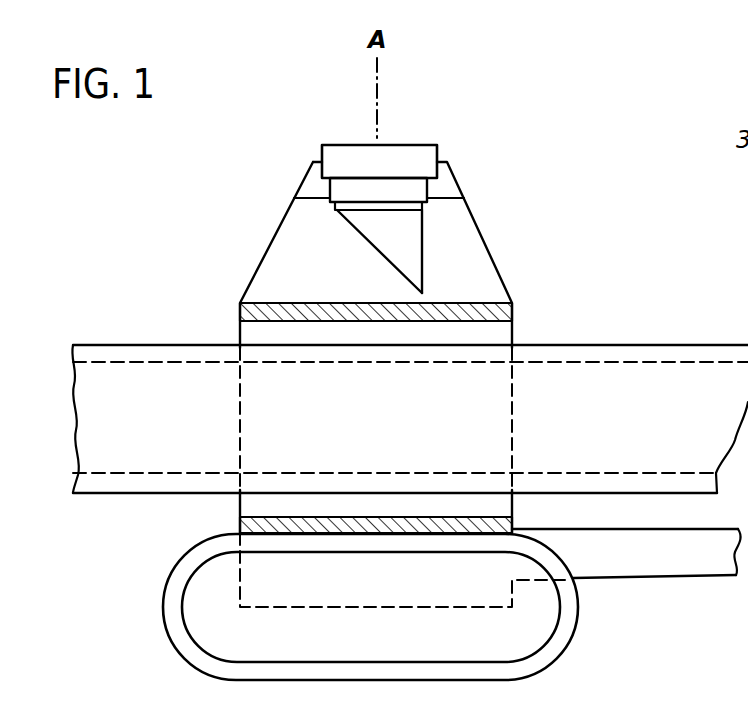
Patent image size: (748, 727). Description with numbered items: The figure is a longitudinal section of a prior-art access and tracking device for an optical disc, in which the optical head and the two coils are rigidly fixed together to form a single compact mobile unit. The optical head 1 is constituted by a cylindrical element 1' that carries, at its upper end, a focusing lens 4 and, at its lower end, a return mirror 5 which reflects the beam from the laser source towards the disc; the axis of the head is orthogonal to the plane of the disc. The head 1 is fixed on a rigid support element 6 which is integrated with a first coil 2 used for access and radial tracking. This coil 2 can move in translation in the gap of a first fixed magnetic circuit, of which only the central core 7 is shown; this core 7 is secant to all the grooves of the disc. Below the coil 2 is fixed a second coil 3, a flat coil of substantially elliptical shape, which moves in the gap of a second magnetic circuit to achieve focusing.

The optical head 1 is at (426, 225).
The cylindrical element 1' is at (332, 195).
The first coil 2 is at (240, 312).
The second coil 3 is at (176, 634).
The focusing lens 4 is at (415, 155).
The return mirror 5 is at (380, 257).
The rigid support element 6 is at (498, 268).
The central core 7 is at (688, 345).